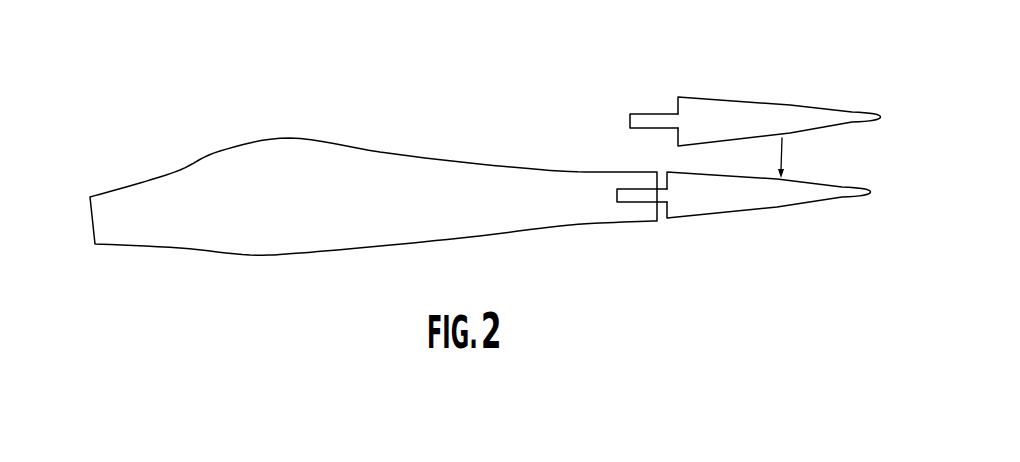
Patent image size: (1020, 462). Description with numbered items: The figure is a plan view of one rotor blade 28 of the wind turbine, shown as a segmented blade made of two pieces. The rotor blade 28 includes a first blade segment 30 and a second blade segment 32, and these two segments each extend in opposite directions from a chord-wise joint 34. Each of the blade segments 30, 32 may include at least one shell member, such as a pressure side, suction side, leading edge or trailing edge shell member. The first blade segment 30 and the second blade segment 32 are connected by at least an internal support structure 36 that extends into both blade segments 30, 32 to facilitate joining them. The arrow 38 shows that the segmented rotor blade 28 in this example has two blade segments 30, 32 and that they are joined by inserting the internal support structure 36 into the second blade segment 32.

The rotor blade 28 is at (118, 89).
The first blade segment 30 is at (750, 108).
The second blade segment 32 is at (182, 243).
The chord-wise joint 34 is at (662, 213).
The internal support structure 36 is at (648, 119).
The arrow 38 is at (787, 150).